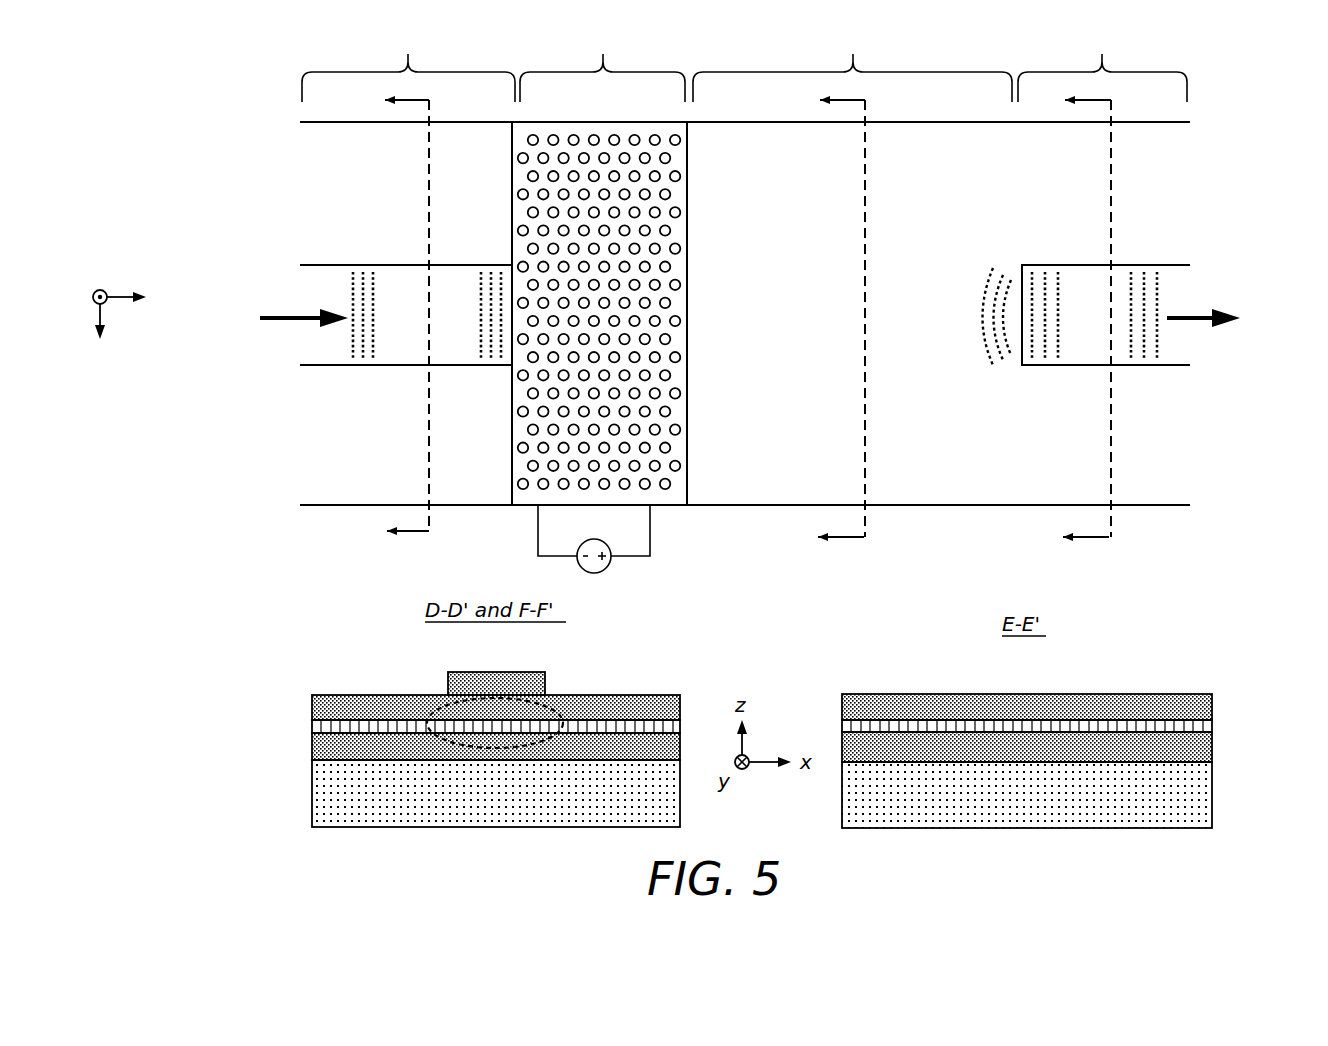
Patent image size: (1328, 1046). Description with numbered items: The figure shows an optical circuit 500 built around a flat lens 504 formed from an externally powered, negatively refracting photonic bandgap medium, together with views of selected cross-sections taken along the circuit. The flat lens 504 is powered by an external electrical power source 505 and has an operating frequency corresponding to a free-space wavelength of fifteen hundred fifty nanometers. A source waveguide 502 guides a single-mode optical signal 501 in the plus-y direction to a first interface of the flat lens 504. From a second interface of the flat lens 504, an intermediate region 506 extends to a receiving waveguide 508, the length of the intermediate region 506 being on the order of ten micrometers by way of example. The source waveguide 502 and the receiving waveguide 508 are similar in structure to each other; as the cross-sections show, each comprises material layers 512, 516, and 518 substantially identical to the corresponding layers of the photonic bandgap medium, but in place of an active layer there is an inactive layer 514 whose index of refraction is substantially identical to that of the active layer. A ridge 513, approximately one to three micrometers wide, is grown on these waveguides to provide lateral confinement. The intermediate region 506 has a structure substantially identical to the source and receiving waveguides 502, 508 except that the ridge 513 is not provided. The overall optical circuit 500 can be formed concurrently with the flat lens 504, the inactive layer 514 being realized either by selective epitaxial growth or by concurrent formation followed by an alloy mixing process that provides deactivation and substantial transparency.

The optical circuit 500 is at (215, 123).
The single-mode optical signal 501 is at (323, 335).
The source waveguide 502 is at (408, 65).
The flat lens 504 is at (599, 267).
The external electrical power source 505 is at (605, 568).
The intermediate region 506 is at (852, 65).
The receiving waveguide 508 is at (1102, 65).
The material layer 512 is at (312, 700).
The ridge 513 is at (448, 672).
The inactive layer 514 is at (312, 725).
The material layer 516 is at (312, 745).
The material layer 518 is at (312, 792).